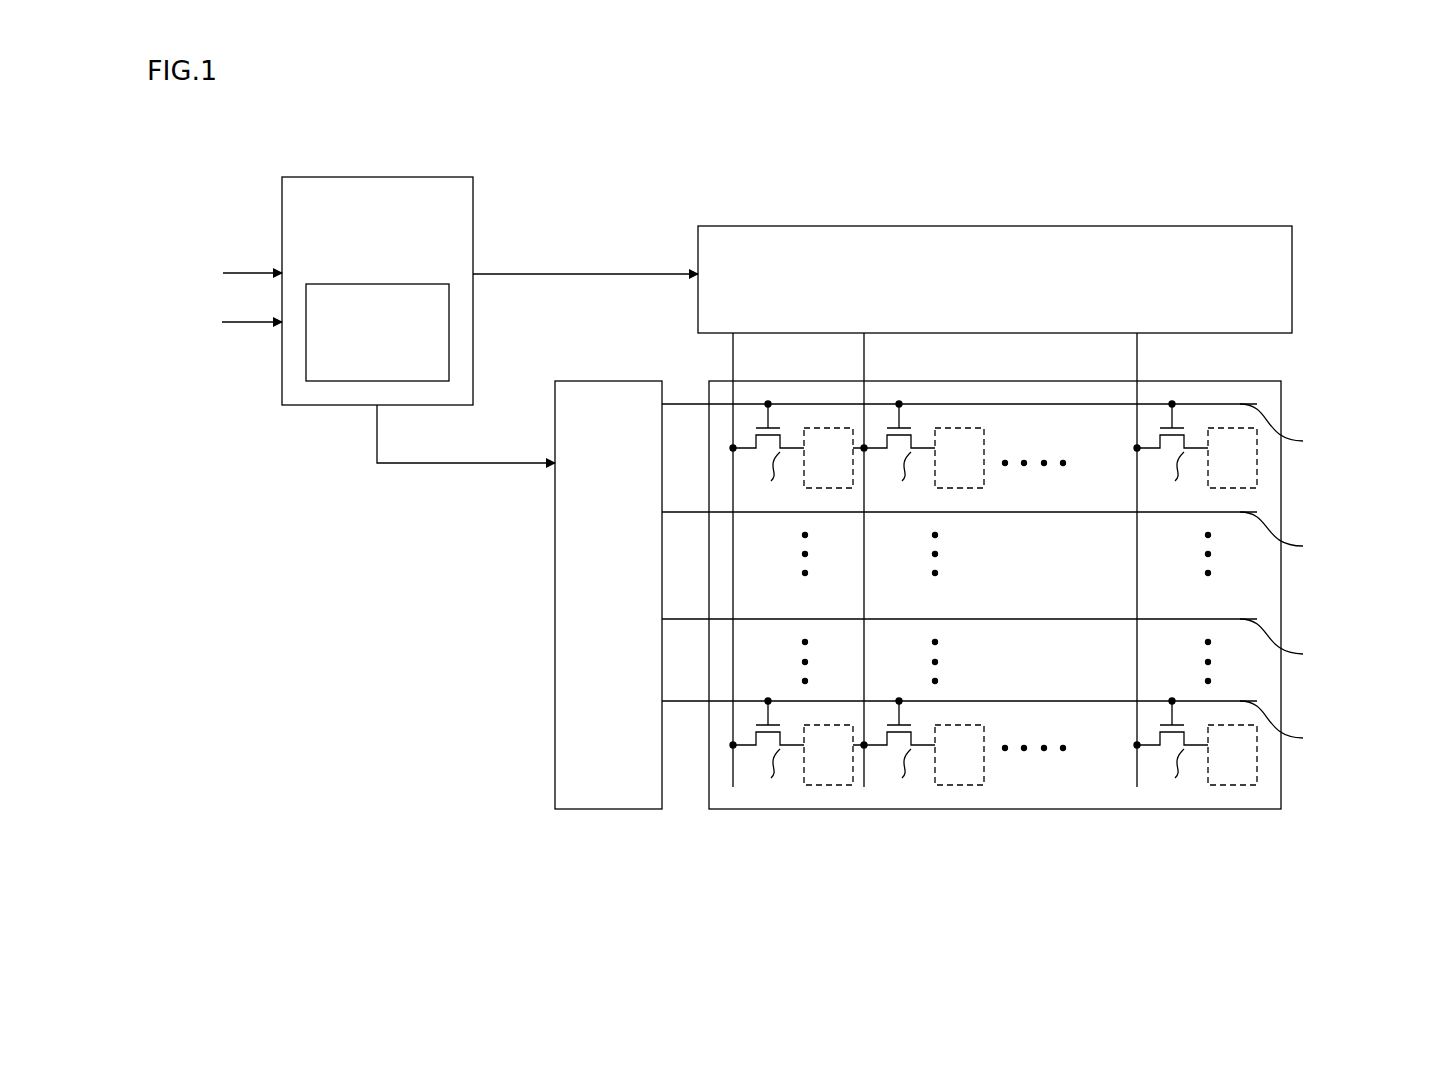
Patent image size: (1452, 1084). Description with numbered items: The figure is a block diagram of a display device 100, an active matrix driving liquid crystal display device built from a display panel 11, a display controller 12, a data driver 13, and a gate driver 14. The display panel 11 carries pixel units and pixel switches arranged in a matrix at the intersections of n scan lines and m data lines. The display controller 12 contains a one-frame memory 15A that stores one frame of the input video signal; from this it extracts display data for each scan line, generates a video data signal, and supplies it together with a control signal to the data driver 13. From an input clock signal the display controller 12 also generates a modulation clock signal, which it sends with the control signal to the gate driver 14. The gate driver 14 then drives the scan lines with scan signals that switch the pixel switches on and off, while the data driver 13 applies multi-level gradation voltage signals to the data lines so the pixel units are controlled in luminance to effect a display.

The display device 100 is at (1255, 143).
The display controller 12 is at (473, 201).
The one-frame memory 15A is at (405, 284).
The data driver 13 is at (1248, 226).
The gate driver 14 is at (645, 381).
The display panel 11 is at (1282, 402).